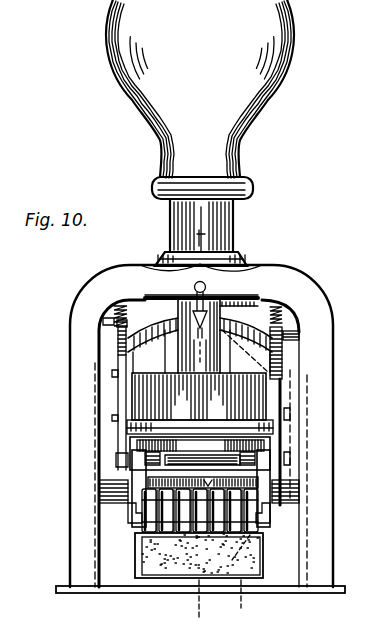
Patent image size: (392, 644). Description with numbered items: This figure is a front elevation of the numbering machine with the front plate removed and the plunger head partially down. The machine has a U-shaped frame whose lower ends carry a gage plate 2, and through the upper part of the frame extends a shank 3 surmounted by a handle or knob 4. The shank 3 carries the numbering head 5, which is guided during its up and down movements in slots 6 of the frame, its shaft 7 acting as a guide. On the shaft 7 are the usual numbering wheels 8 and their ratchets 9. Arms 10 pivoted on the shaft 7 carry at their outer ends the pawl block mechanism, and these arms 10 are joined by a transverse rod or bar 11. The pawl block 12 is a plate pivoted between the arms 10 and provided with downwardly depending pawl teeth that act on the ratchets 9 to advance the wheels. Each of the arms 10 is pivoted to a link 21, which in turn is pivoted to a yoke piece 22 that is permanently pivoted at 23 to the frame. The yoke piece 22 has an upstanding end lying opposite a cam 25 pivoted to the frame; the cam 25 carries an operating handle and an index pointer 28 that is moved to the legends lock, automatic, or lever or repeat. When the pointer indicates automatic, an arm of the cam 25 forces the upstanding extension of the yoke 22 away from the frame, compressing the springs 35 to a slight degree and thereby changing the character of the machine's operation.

The gage plate 2 is at (283, 592).
The shank 3 is at (190, 348).
The handle or knob 4 is at (292, 53).
The numbering head 5 is at (175, 527).
The slots 6 is at (95, 570).
The shaft 7 is at (122, 506).
The numbering wheels 8 is at (203, 222).
The ratchets 9 is at (200, 245).
The arms 10 is at (275, 478).
The transverse rod or bar 11 is at (269, 428).
The pawl block 12 is at (262, 460).
The link 21 is at (130, 434).
The yoke piece 22 is at (126, 349).
The pivot 23 is at (285, 327).
The cam 25 is at (233, 296).
The index pointer 28 is at (291, 336).
The springs 35 is at (287, 302).